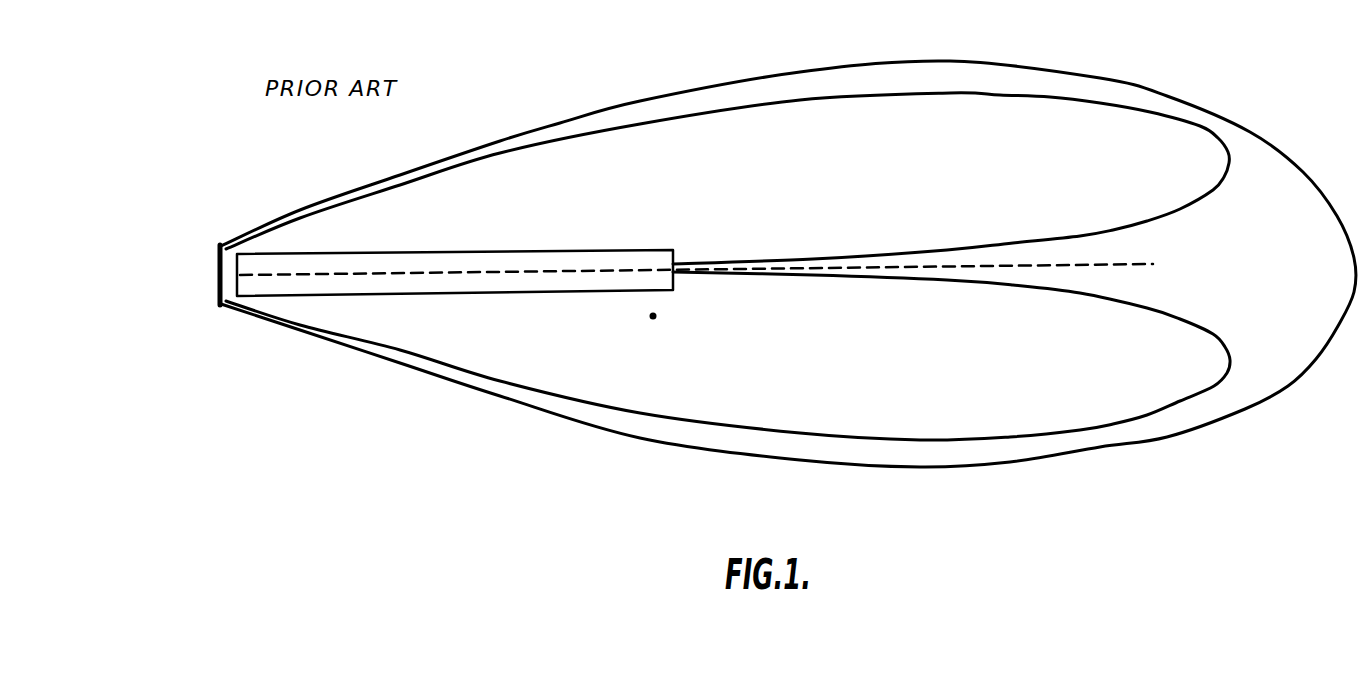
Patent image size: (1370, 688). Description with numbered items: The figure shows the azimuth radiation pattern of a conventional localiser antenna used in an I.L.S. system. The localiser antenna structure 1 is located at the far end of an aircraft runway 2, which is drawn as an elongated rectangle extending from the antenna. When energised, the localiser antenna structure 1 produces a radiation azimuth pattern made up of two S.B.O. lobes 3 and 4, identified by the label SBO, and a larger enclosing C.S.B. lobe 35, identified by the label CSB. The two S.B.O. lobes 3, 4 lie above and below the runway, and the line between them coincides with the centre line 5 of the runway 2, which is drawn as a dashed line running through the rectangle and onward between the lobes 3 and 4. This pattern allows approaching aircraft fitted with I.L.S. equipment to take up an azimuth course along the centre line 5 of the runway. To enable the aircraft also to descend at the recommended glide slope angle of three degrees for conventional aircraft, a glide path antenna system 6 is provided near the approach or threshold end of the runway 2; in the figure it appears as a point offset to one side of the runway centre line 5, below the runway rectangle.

The localiser antenna structure 1 is at (219, 245).
The aircraft runway 2 is at (436, 294).
The S.B.O. lobe 3 is at (826, 432).
The S.B.O. lobe 4 is at (849, 99).
The centre line 5 is at (533, 274).
The glide path antenna system 6 is at (656, 318).
The C.S.B. lobe 35 is at (788, 254).
The C.S.B. lobe CSB is at (1113, 80).
The S.B.O. lobes SBO is at (759, 266).